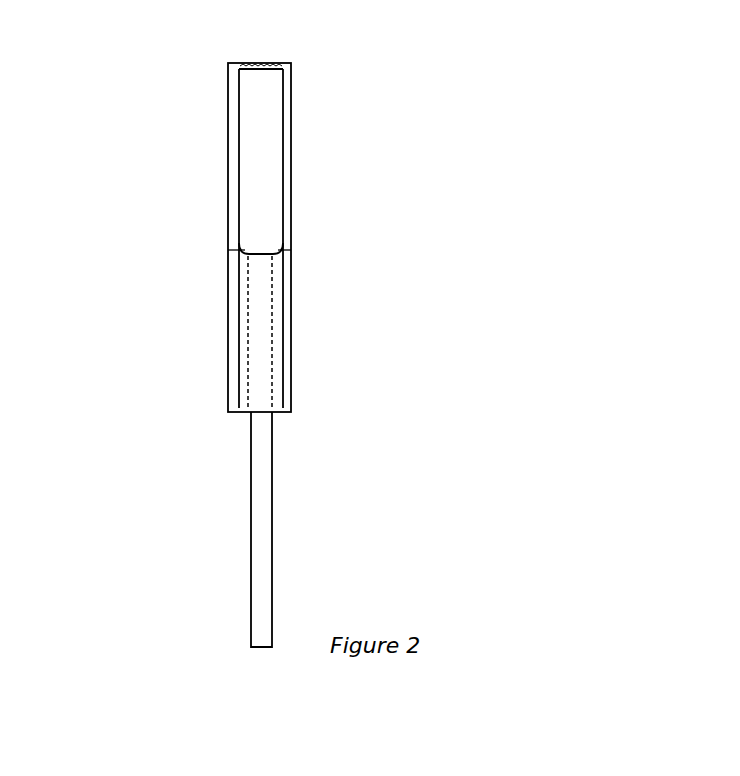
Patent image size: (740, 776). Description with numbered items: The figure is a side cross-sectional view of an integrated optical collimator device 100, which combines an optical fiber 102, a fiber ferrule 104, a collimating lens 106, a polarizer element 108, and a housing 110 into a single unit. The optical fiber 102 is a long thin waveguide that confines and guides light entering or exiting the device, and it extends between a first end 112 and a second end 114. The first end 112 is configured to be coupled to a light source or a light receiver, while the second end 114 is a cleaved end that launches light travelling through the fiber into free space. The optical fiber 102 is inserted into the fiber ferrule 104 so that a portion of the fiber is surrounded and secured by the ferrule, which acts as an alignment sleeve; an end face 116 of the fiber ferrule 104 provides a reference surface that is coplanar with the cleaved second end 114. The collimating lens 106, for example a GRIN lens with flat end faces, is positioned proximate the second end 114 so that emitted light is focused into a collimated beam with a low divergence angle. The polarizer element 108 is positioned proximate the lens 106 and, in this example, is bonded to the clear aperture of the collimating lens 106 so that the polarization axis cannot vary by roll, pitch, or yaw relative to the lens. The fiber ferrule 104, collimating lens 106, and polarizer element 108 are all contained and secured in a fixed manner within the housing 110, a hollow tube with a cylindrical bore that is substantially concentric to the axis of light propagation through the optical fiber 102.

The integrated optical collimator device 100 is at (502, 76).
The optical fiber 102 is at (241, 567).
The fiber ferrule 104 is at (236, 306).
The collimating lens 106 is at (226, 162).
The polarizer element 108 is at (290, 53).
The housing 110 is at (217, 378).
The first end 112 is at (244, 657).
The second end 114 is at (233, 249).
The end face 116 is at (284, 241).